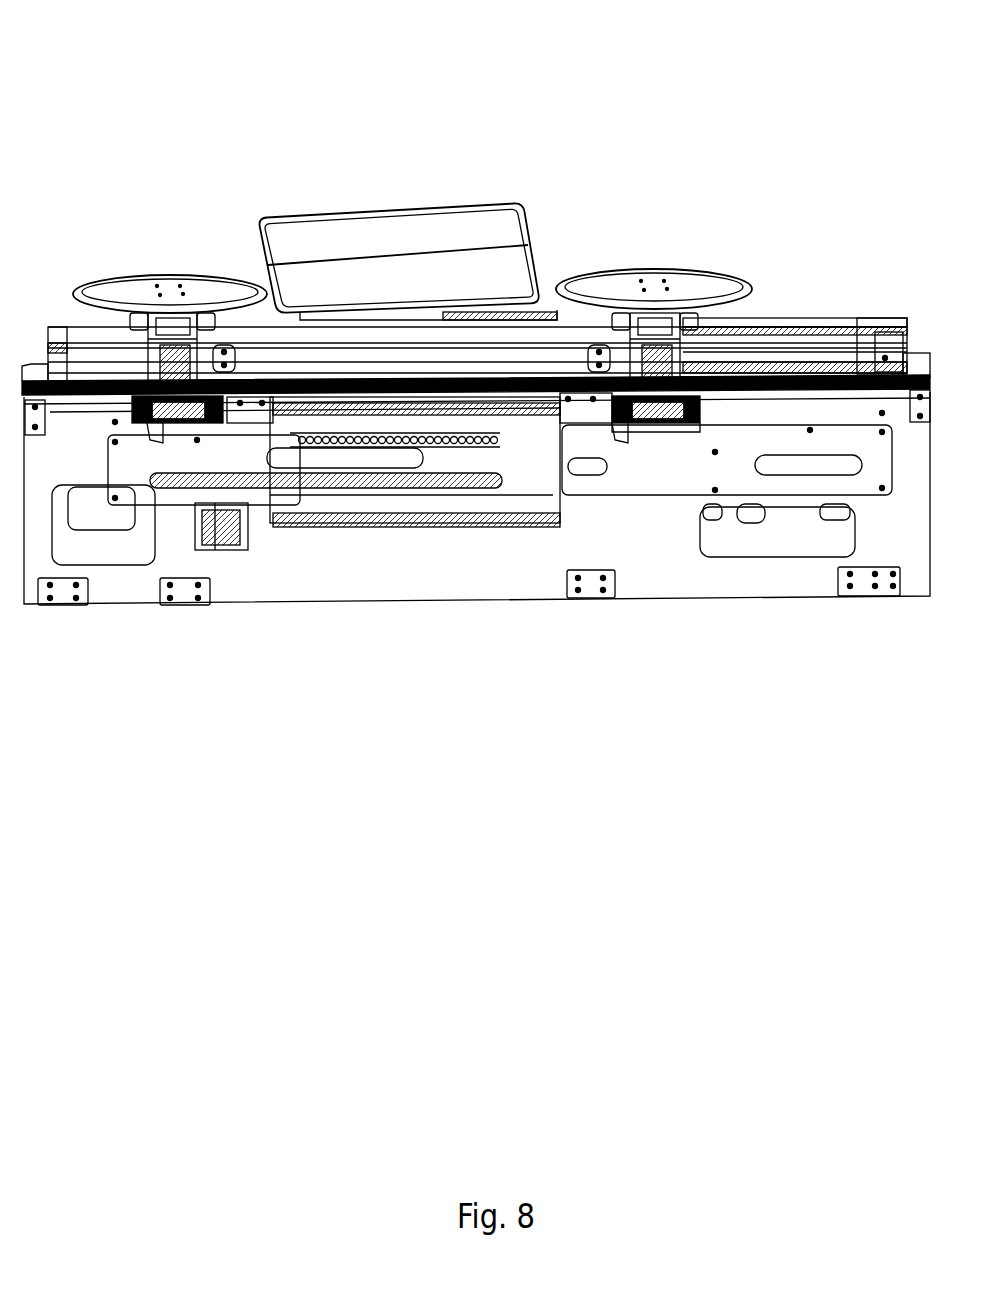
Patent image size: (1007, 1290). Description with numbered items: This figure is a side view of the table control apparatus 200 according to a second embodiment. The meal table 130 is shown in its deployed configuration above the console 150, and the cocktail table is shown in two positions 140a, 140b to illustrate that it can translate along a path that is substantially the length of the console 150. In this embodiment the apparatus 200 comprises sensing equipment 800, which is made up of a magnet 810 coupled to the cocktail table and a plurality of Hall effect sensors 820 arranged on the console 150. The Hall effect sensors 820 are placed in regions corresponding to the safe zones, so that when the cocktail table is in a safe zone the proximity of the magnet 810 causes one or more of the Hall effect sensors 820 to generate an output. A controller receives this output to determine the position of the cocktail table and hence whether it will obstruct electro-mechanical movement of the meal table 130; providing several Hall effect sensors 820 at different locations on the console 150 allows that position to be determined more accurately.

The table control apparatus 200 is at (235, 121).
The meal table 130 is at (437, 243).
The cocktail table first position 140a is at (145, 293).
The cocktail table second position 140b is at (660, 280).
The console 150 is at (828, 328).
The sensing equipment 800 is at (633, 425).
The magnet 810 is at (680, 410).
The Hall effect sensors 820 is at (152, 440).